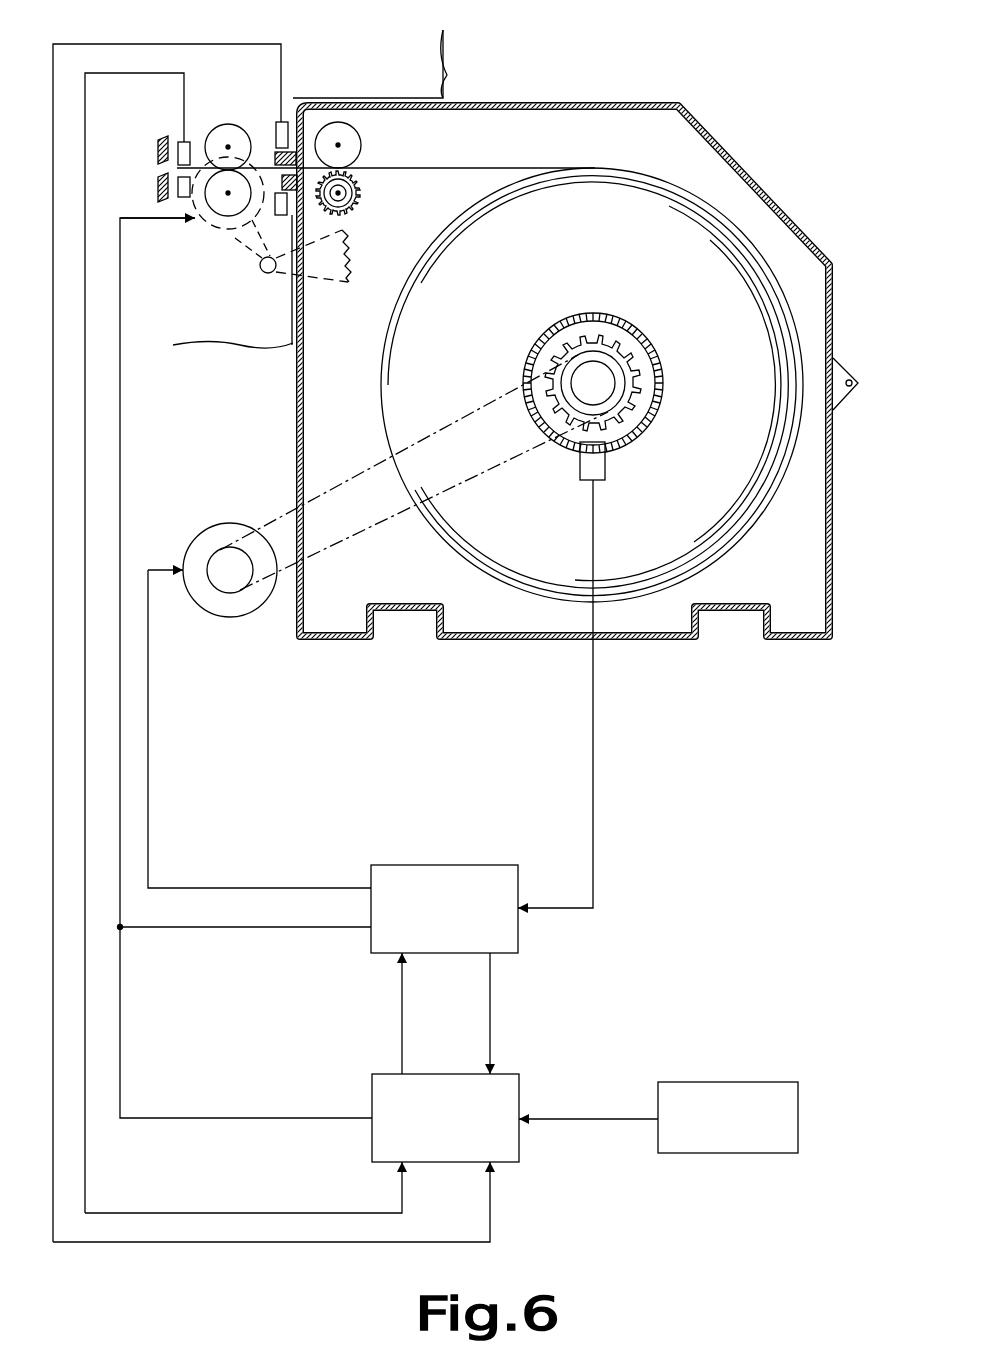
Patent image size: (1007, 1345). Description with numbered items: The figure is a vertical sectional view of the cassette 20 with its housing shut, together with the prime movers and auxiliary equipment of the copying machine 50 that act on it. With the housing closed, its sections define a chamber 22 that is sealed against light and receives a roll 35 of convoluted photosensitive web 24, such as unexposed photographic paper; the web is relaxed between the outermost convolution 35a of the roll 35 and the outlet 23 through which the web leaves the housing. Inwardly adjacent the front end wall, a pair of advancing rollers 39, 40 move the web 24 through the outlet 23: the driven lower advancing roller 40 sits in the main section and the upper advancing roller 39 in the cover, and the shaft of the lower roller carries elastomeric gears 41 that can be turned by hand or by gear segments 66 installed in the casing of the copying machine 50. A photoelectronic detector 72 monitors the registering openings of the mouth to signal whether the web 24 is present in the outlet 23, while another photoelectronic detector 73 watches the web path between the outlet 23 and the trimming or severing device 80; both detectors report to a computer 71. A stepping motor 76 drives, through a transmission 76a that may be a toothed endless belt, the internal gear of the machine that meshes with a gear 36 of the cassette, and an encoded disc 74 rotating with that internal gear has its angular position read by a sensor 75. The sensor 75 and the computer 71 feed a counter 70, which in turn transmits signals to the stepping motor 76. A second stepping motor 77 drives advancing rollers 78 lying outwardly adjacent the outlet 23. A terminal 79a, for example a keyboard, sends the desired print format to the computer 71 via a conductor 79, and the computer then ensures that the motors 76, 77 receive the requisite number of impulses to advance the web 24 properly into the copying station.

The cassette 20 is at (579, 351).
The chamber 22 is at (564, 151).
The outlet 23 is at (270, 162).
The web 24 is at (480, 168).
The roll 35 is at (614, 266).
The outermost convolution 35a is at (447, 548).
The gear 36 is at (628, 391).
The upper advancing roller 39 is at (355, 142).
The lower advancing roller 40 is at (365, 191).
The gear 41 is at (355, 207).
The copying machine 50 is at (430, 45).
The gear segment 66 is at (350, 282).
The counter 70 is at (457, 922).
The computer 71 is at (457, 1133).
The photoelectronic detector 72 is at (286, 110).
The photoelectronic detector 73 is at (183, 140).
The encoded disc 74 is at (648, 348).
The sensor 75 is at (598, 468).
The stepping motor 76 is at (230, 614).
The transmission 76a is at (460, 478).
The second stepping motor 77 is at (225, 222).
The advancing roller 78 is at (230, 128).
The conductor 79 is at (592, 1119).
The terminal 79a is at (733, 1090).
The severing device 80 is at (160, 188).